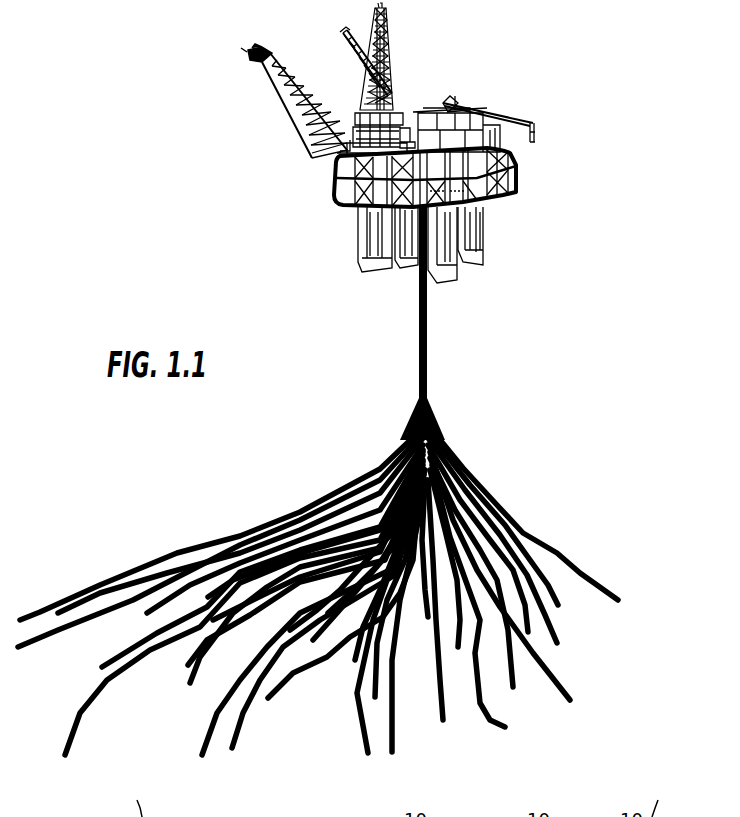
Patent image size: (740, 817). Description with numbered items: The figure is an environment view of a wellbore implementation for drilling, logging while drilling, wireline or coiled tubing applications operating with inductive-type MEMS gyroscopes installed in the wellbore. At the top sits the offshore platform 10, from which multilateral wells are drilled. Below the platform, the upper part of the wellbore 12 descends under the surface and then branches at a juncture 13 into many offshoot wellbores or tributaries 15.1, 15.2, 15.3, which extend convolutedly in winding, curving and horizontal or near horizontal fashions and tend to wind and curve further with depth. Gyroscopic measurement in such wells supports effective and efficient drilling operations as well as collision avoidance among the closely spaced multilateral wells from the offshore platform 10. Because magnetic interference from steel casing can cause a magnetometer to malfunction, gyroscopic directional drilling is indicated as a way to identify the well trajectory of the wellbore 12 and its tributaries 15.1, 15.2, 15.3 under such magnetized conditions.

The offshore platform 10 is at (388, 161).
The wellbore 12 is at (428, 378).
The juncture 13 is at (443, 416).
The offshoot wellbore 15.1 is at (557, 555).
The offshoot wellbore 15.2 is at (175, 555).
The offshoot wellbore 15.3 is at (283, 685).